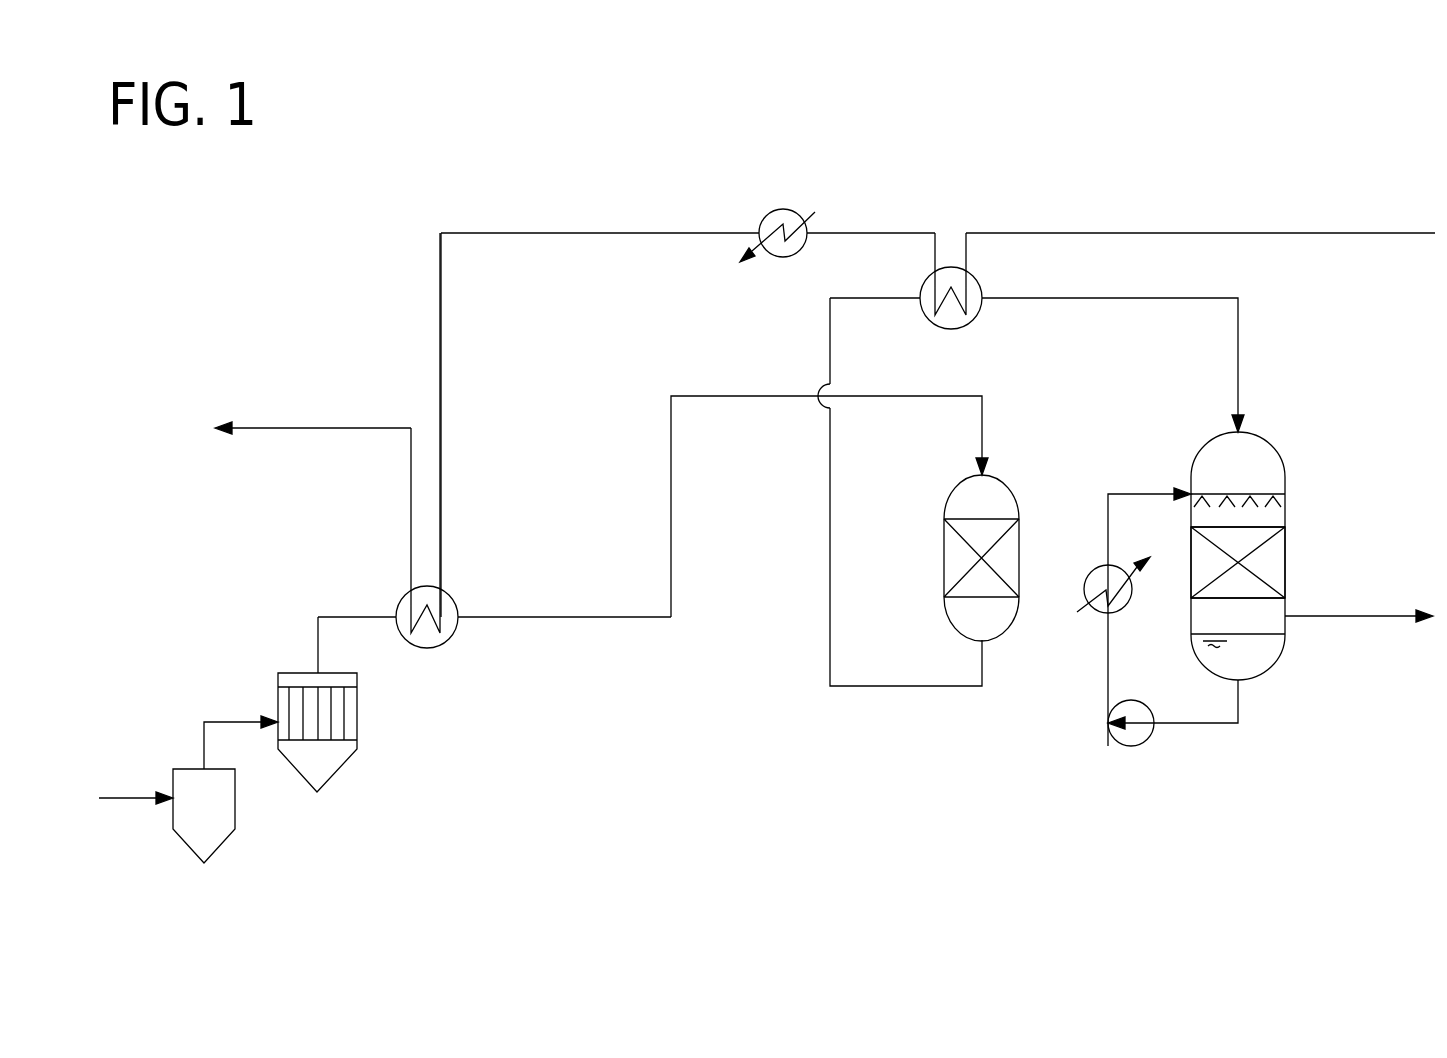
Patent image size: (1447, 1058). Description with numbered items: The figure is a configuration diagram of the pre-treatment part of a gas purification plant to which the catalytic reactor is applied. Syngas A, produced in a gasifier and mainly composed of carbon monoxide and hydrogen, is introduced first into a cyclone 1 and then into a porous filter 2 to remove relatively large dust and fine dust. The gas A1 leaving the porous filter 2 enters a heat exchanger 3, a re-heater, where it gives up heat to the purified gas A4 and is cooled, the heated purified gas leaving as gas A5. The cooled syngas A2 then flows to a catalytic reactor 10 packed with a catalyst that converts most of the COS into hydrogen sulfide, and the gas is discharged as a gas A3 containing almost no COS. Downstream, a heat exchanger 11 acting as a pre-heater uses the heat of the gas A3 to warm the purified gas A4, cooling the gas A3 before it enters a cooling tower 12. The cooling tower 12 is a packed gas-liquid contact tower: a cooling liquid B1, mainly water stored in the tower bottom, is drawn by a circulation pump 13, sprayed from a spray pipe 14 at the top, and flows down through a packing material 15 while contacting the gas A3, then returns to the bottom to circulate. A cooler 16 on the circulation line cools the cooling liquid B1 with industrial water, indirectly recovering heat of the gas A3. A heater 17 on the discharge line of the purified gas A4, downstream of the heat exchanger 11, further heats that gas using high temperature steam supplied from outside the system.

The syngas A is at (128, 796).
The cyclone 1 is at (183, 768).
The porous filter 2 is at (293, 672).
The gas from the porous filter A1 is at (345, 616).
The heat exchanger 3 is at (453, 603).
The gas A5 is at (318, 428).
The heater 17 is at (780, 209).
The syngas cooled by the heat exchanger A2 is at (744, 396).
The heat exchanger 11 is at (973, 318).
The catalytic reactor 10 is at (998, 479).
The gas containing almost no COS A3 is at (903, 687).
The purified gas A4 is at (1197, 233).
The cooling tower 12 is at (1204, 447).
The spray pipe 14 is at (1266, 490).
The packing material 15 is at (1270, 562).
The cooling liquid B1 is at (1132, 494).
The cooler 16 is at (1090, 576).
The circulation pump 13 is at (1131, 746).